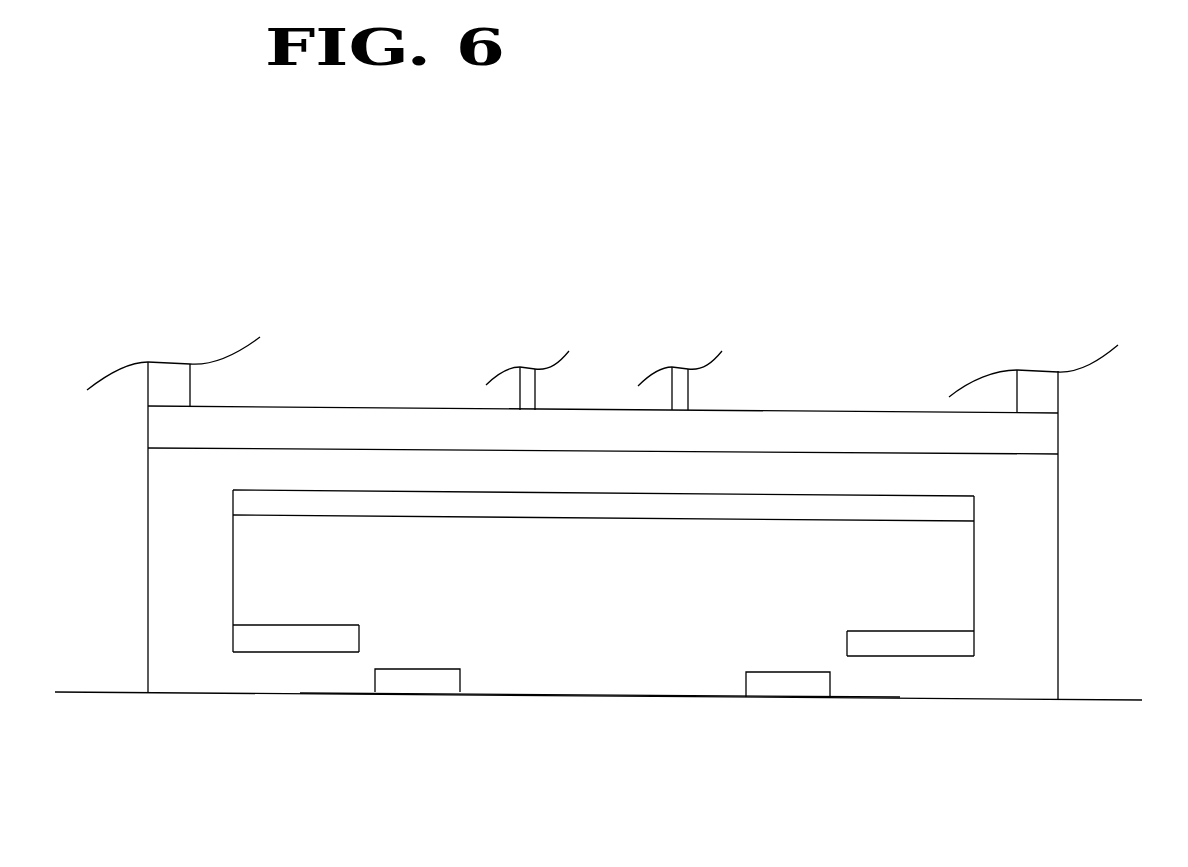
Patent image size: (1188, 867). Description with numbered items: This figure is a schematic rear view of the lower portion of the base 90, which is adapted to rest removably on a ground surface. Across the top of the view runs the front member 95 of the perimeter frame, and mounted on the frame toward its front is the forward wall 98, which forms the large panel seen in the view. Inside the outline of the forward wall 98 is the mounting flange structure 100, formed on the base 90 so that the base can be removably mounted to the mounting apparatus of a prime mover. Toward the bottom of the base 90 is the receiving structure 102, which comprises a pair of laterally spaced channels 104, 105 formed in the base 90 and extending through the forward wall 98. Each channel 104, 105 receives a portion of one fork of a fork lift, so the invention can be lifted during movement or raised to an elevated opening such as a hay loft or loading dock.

The base 90 is at (632, 570).
The front member 95 is at (768, 427).
The forward wall 98 is at (1028, 540).
The mounting flange structure 100 is at (465, 513).
The receiving structure 102 is at (458, 717).
The channel 104 is at (415, 683).
The channel 105 is at (788, 686).